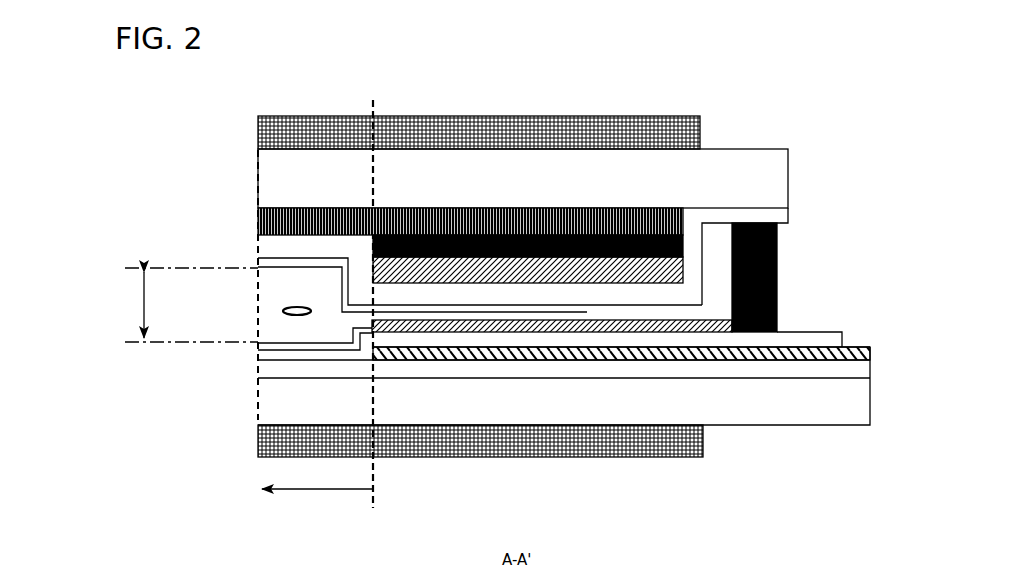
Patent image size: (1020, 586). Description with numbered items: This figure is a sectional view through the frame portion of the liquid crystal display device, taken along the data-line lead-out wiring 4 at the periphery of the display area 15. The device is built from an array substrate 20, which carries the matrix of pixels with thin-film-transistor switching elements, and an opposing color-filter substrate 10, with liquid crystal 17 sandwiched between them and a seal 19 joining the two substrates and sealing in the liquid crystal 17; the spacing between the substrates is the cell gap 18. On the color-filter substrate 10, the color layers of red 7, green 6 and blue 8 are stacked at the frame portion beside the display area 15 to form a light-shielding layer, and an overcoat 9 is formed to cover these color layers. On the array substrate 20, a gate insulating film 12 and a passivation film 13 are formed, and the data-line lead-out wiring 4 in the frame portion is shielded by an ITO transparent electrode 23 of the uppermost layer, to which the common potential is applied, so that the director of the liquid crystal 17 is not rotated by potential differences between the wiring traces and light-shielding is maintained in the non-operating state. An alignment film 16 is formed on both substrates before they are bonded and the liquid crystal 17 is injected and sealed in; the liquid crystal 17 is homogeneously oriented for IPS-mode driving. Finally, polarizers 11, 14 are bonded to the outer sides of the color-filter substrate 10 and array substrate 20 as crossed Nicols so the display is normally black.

The data-line lead-out wiring 4 is at (718, 358).
The green color layer 6 is at (258, 216).
The red color layer 7 is at (516, 214).
The blue color layer 8 is at (613, 272).
The overcoat 9 is at (740, 220).
The color-filter substrate 10 is at (268, 174).
The polarizer 11 is at (447, 123).
The gate insulating film 12 is at (815, 366).
The passivation film 13 is at (802, 340).
The polarizer 14 is at (515, 447).
The display area 15 is at (317, 502).
The alignment film 16 is at (266, 270).
The liquid crystal 17 is at (277, 306).
The cell gap 18 is at (148, 305).
The seal 19 is at (777, 238).
The array substrate 20 is at (268, 401).
The ITO transparent electrode 23 is at (704, 326).